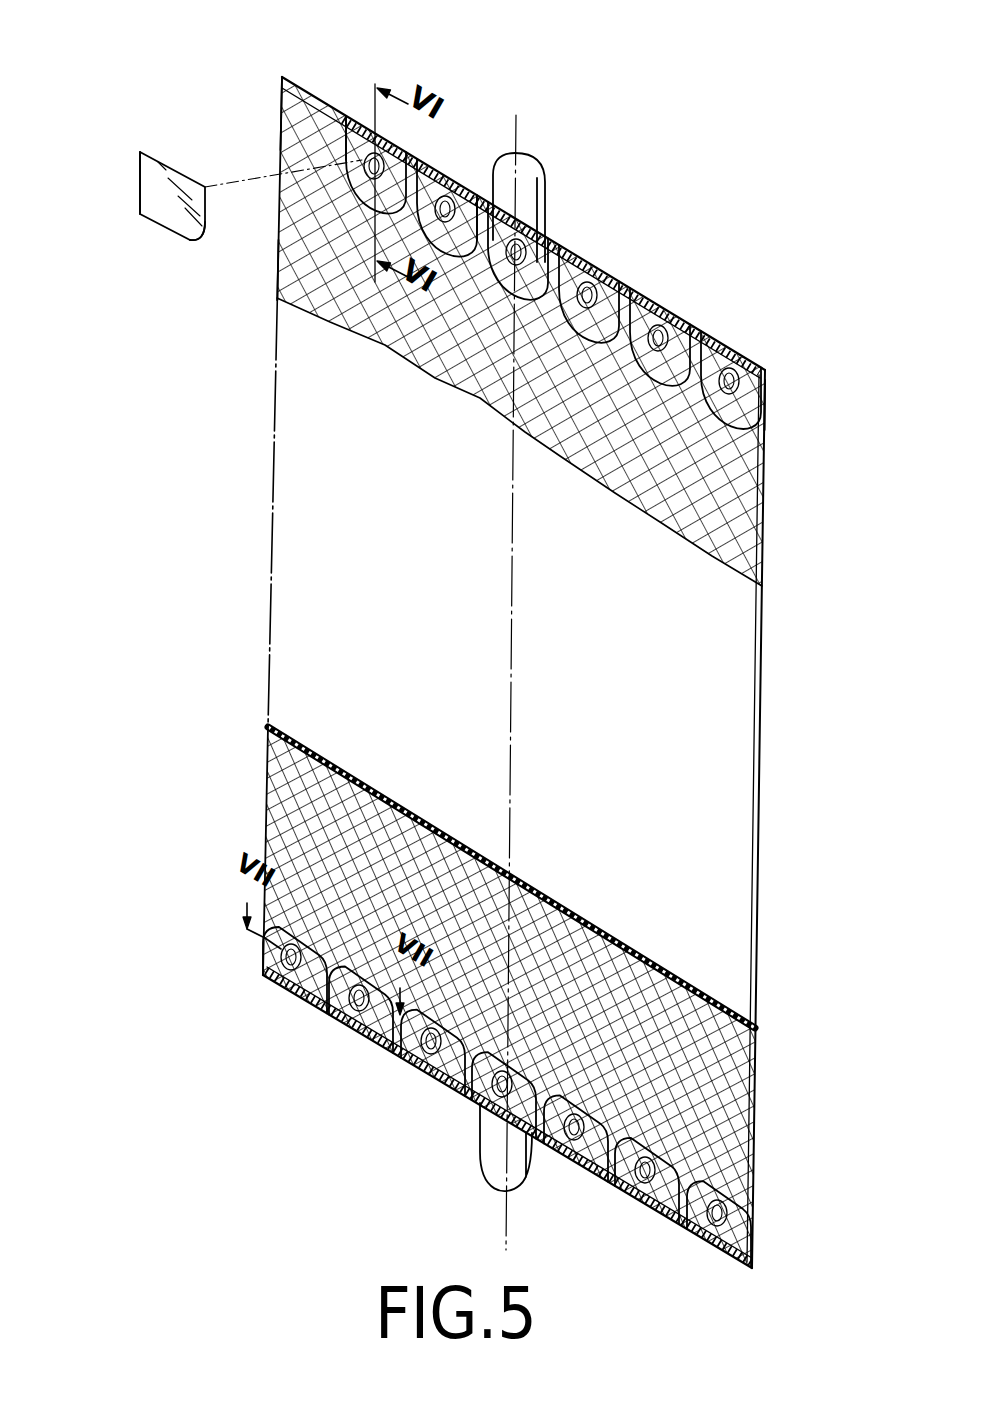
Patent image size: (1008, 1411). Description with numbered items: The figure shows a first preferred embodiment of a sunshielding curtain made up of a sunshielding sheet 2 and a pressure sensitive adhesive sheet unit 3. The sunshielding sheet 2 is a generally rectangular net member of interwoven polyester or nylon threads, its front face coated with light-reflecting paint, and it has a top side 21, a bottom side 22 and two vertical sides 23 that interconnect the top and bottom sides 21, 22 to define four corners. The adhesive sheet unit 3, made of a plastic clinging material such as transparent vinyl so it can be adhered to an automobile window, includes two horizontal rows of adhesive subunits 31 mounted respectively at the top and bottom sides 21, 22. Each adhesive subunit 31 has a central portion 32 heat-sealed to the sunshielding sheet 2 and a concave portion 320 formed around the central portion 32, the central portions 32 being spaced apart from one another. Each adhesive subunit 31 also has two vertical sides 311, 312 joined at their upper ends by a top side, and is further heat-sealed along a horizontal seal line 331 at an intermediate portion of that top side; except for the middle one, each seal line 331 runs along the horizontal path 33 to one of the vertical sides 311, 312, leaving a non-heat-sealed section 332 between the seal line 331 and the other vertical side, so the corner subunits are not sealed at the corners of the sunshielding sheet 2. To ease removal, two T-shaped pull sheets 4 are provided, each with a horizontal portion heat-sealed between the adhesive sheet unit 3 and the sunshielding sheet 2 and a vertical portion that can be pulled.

The sunshielding sheet 2 is at (770, 546).
The top side 21 is at (710, 334).
The bottom side 22 is at (591, 1178).
The vertical sides 23 is at (271, 372).
The pressure sensitive adhesive sheet unit 3 is at (676, 310).
The adhesive subunit 31 is at (171, 156).
The vertical side 311 is at (208, 228).
The vertical side 312 is at (140, 181).
The central portion 32 is at (363, 168).
The concave portion 320 is at (276, 278).
The horizontal path 33 is at (643, 312).
The horizontal seal line 331 is at (479, 165).
The non-heat-sealed section 332 is at (350, 112).
The T-shaped pull sheet 4 is at (540, 168).